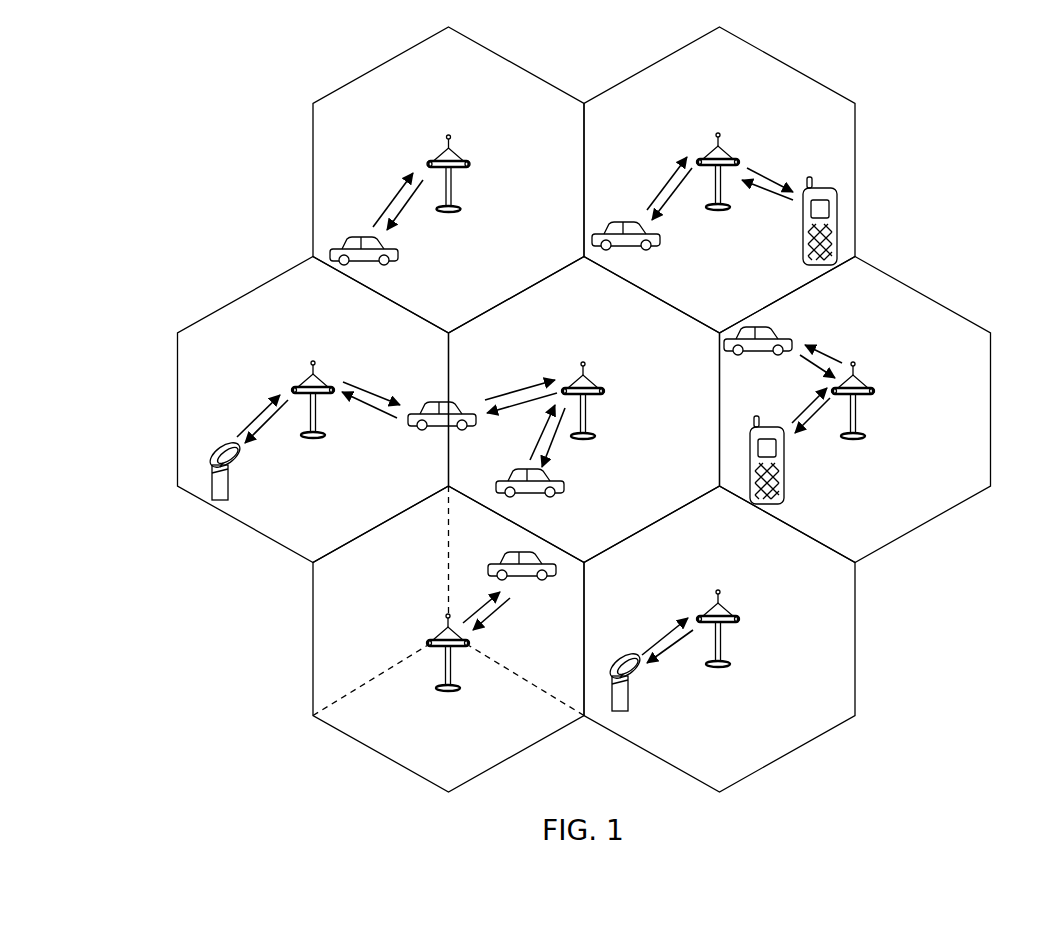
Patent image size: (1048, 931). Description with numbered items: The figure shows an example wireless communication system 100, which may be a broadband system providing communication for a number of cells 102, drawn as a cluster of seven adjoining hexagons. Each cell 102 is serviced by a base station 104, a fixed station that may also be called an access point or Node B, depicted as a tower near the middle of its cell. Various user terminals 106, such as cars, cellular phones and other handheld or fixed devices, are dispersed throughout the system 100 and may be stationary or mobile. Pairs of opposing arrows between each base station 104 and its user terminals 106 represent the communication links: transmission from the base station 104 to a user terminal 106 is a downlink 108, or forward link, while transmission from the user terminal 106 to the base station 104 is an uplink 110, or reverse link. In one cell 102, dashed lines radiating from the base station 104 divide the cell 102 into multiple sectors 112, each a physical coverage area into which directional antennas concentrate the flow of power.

The wireless communication system 100 is at (977, 107).
The cell 102 is at (388, 58).
The base station 104 is at (448, 134).
The user terminal 106 is at (402, 259).
The downlink 108 is at (397, 227).
The uplink 110 is at (395, 196).
The sector 112 is at (498, 752).